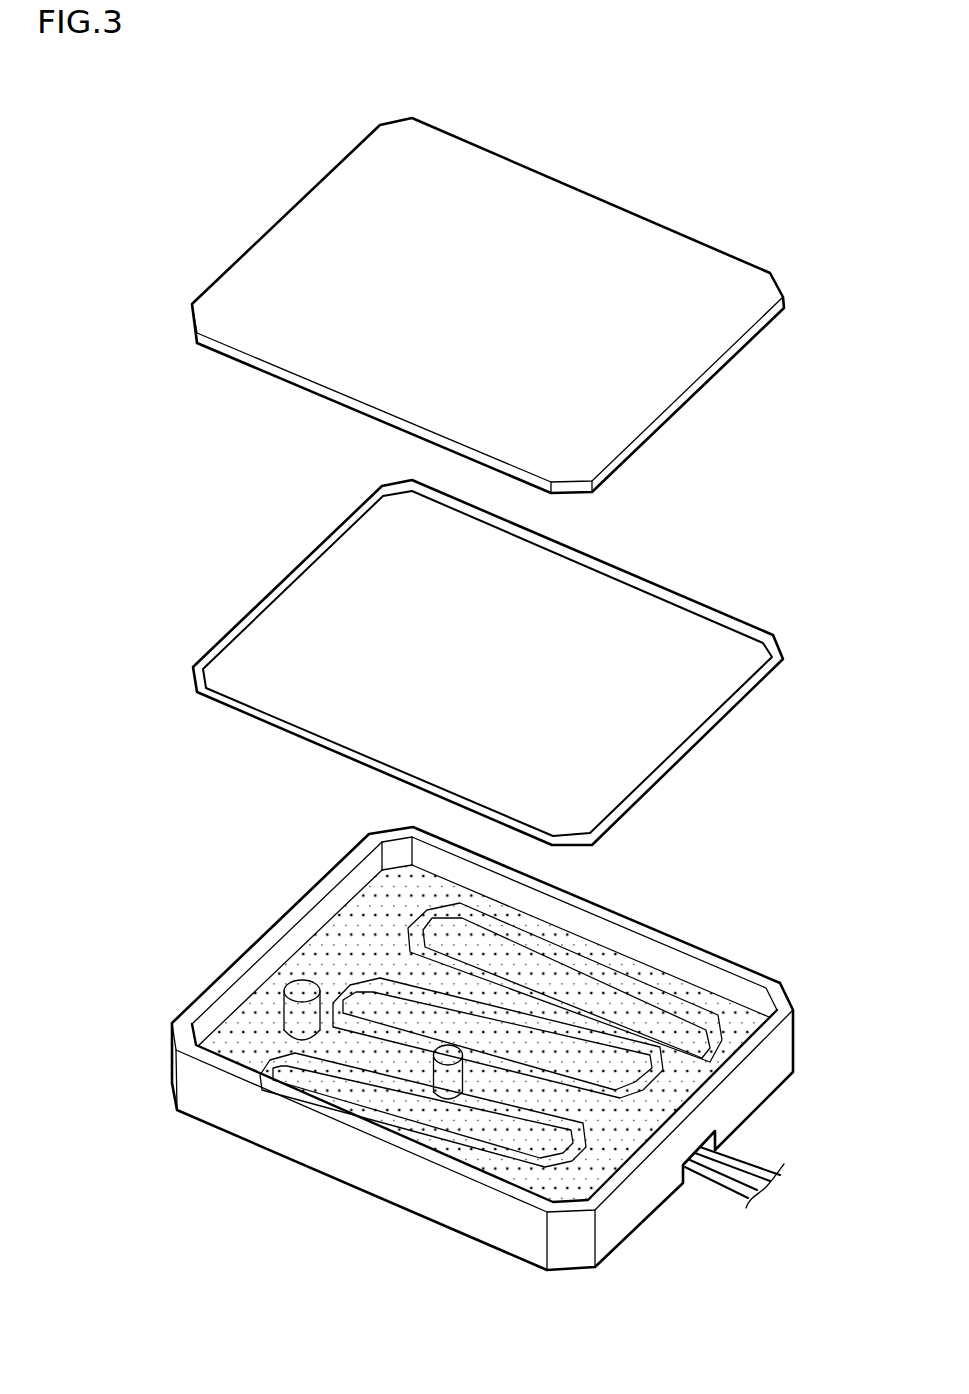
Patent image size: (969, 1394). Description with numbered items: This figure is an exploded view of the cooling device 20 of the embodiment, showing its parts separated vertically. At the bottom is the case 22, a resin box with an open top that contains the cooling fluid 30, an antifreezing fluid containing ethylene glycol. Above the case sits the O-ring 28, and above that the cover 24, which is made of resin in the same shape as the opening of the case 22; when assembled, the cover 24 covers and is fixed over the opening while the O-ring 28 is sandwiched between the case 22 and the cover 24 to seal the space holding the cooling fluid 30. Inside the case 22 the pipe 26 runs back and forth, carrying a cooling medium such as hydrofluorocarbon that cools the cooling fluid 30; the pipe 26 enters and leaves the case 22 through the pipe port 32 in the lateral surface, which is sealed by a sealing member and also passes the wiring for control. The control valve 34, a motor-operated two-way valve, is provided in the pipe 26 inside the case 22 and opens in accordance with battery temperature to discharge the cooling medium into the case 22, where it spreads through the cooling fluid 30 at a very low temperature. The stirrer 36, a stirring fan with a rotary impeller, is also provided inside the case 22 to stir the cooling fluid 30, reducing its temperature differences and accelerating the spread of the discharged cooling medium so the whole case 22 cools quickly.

The cooling device 20 is at (160, 100).
The case 22 is at (290, 1163).
The cover 24 is at (697, 241).
The pipe 26 is at (758, 1163).
The O-ring 28 is at (703, 604).
The cooling fluid 30 is at (373, 937).
The pipe port 32 is at (692, 1154).
The control valve 34 is at (447, 1082).
The stirrer 36 is at (302, 987).